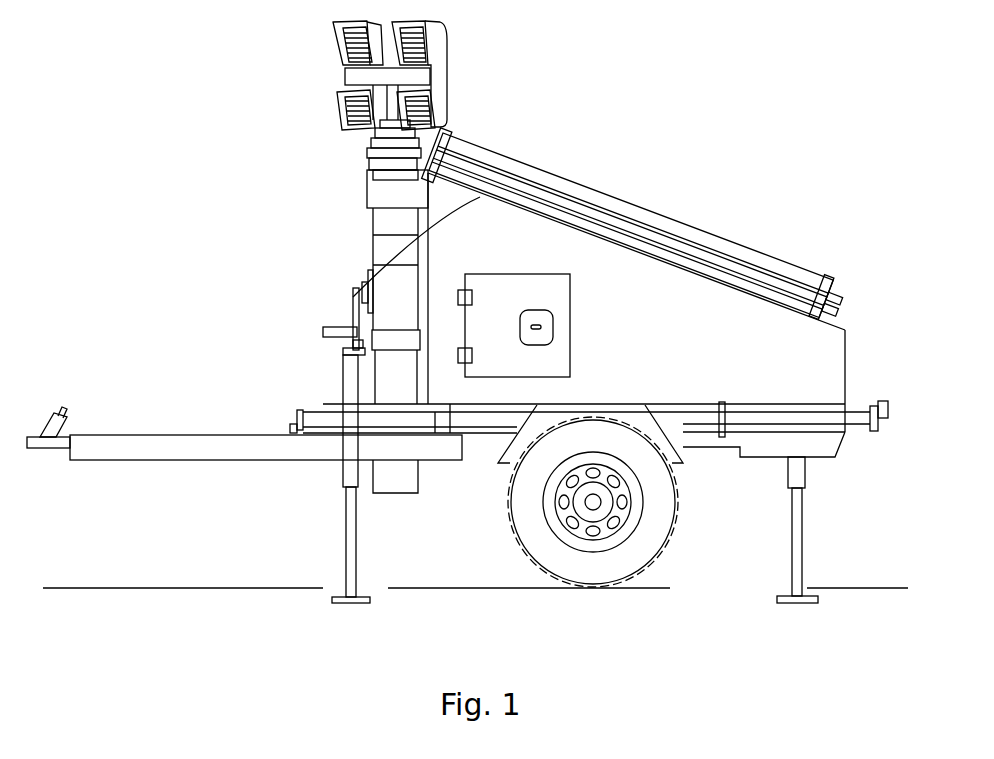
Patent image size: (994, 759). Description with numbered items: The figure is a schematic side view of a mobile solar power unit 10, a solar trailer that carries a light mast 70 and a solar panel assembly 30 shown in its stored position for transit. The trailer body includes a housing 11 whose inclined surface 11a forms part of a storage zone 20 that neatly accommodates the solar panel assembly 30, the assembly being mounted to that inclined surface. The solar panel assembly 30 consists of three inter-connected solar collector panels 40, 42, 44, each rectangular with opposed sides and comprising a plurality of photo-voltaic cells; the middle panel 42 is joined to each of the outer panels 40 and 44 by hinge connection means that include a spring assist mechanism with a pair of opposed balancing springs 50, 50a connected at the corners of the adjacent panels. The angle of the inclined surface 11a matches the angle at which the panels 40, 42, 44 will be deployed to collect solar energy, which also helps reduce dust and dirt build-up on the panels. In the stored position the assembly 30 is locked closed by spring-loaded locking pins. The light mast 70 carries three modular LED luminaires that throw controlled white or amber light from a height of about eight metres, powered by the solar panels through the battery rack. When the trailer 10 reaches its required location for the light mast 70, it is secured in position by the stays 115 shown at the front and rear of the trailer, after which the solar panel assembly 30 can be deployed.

The mobile solar power unit 10 is at (243, 198).
The body housing 11 is at (813, 372).
The inclined surface 11a is at (362, 297).
The storage zone 20 is at (558, 170).
The solar panel assembly 30 is at (713, 222).
The solar collector panel 40 is at (790, 262).
The solar collector panel 42 is at (625, 222).
The solar collector panel 44 is at (762, 300).
The balancing spring 50 is at (463, 142).
The balancing spring 50a is at (847, 289).
The light mast 70 is at (363, 222).
The stays 115 is at (343, 542).